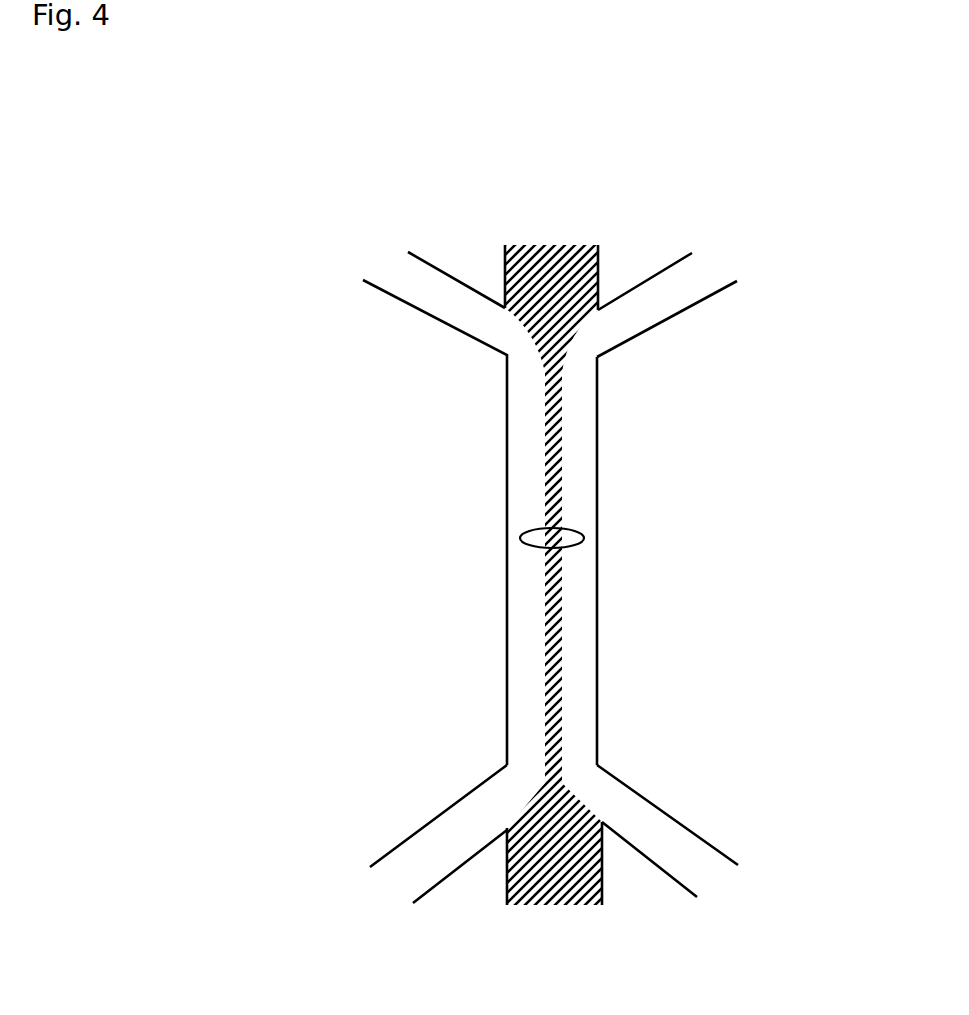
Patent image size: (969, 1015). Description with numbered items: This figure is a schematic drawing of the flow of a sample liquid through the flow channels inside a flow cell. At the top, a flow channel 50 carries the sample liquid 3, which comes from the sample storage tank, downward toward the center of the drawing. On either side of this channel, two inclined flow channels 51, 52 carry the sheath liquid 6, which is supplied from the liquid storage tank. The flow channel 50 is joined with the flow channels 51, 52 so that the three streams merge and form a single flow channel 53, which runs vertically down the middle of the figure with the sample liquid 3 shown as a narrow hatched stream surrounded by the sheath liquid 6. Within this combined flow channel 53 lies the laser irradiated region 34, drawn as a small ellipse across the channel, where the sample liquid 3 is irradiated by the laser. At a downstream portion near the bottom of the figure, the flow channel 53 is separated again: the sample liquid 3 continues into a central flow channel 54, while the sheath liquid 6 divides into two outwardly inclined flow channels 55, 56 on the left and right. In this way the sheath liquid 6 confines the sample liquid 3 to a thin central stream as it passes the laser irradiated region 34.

The sample liquid 3 is at (562, 275).
The flow channel 50 is at (599, 268).
The flow channel 54 is at (507, 877).
The sheath liquid 6 is at (423, 285).
The flow channel 51 is at (455, 335).
The flow channel 52 is at (657, 325).
The flow channel 53 is at (597, 595).
The laser irradiated region 34 is at (581, 532).
The flow channel 55 is at (422, 830).
The flow channel 56 is at (700, 833).